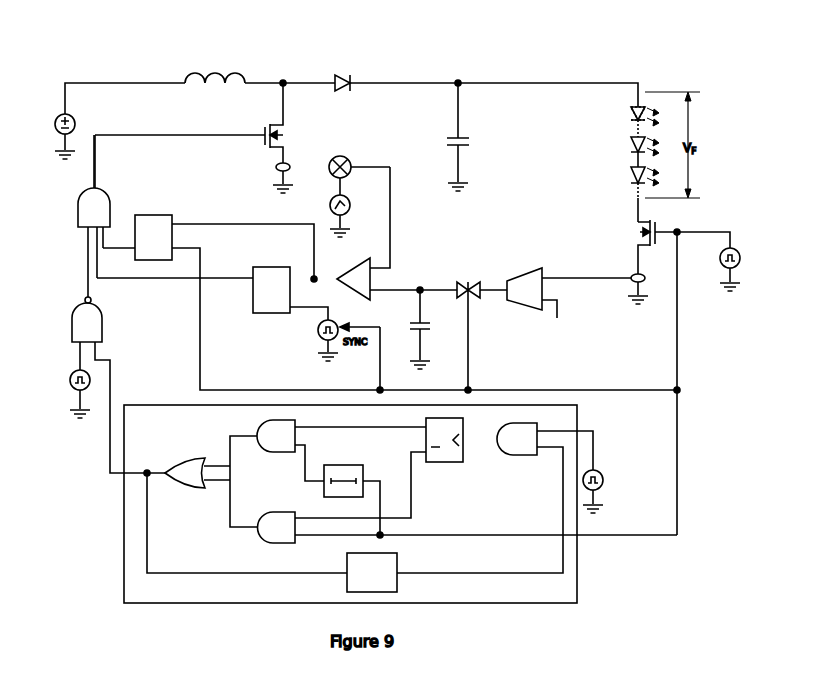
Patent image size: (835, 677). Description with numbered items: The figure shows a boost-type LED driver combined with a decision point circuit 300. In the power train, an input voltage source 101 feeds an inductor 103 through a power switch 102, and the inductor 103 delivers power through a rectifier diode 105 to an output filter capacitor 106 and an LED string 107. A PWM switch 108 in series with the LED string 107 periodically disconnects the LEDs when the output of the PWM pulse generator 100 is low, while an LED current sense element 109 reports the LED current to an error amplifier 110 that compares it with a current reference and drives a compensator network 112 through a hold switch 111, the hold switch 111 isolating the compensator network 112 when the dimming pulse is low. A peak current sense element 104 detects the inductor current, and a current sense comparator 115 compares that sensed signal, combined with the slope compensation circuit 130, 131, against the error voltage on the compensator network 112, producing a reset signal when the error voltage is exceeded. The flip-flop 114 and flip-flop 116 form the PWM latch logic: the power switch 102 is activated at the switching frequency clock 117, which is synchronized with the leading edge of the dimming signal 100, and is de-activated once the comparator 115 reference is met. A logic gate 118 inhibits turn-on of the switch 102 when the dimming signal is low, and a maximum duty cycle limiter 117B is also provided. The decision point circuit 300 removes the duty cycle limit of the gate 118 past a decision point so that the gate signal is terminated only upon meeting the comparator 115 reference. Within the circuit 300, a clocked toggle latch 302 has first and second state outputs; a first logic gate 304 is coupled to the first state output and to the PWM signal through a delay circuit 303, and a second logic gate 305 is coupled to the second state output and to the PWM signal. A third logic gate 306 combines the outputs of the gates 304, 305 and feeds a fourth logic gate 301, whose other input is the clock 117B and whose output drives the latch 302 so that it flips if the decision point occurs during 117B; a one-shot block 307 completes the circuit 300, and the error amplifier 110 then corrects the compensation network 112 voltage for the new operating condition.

The PWM pulse generator 100 is at (745, 257).
The input voltage source 101 is at (57, 116).
The power switch 102 is at (262, 129).
The inductor 103 is at (214, 74).
The peak current sense element 104 is at (276, 172).
The rectifier diode 105 is at (342, 75).
The output filter capacitor 106 is at (447, 141).
The LED string 107 is at (630, 151).
The PWM switch 108 is at (630, 233).
The LED current sense element 109 is at (632, 289).
The error amplifier 110 is at (522, 268).
The hold switch 111 is at (470, 282).
The compensator network 112 is at (425, 336).
The flip-flop 114 is at (155, 212).
The current sense comparator 115 is at (372, 300).
The flip-flop 116 is at (250, 305).
The clock signal 117 is at (314, 335).
The maximum duty cycle limiter 117B is at (67, 386).
The logic gate 118 is at (76, 212).
The slope compensation circuit 130 is at (346, 215).
The slope compensation circuit 131 is at (334, 156).
The decision point circuit 300 is at (118, 560).
The fourth logic gate 301 is at (518, 458).
The clocked toggle latch 302 is at (442, 466).
The delay circuit 303 is at (348, 462).
The first logic gate 304 is at (270, 456).
The second logic gate 305 is at (250, 540).
The third logic gate 306 is at (188, 496).
The one-shot 307 is at (405, 563).